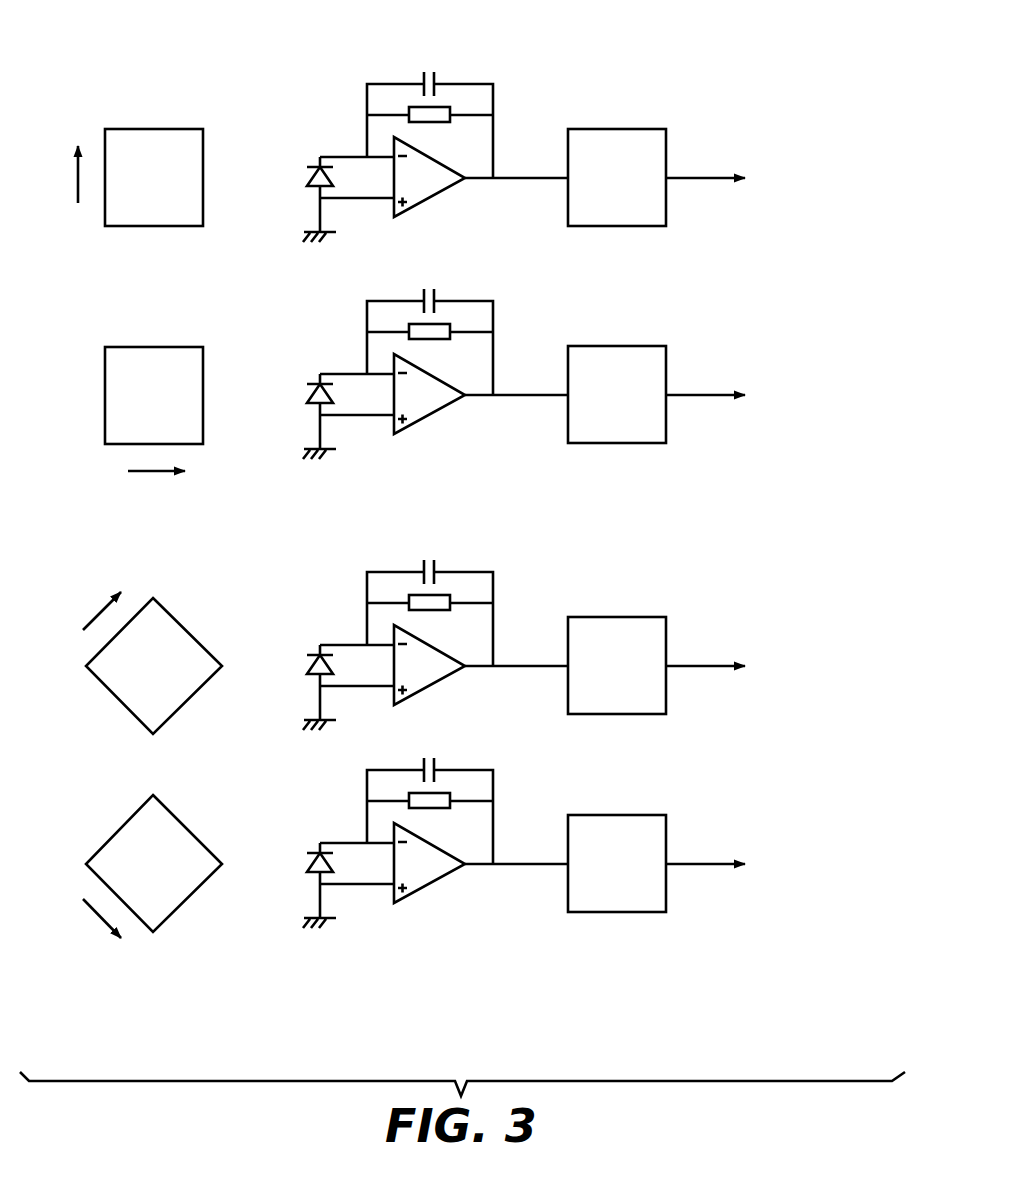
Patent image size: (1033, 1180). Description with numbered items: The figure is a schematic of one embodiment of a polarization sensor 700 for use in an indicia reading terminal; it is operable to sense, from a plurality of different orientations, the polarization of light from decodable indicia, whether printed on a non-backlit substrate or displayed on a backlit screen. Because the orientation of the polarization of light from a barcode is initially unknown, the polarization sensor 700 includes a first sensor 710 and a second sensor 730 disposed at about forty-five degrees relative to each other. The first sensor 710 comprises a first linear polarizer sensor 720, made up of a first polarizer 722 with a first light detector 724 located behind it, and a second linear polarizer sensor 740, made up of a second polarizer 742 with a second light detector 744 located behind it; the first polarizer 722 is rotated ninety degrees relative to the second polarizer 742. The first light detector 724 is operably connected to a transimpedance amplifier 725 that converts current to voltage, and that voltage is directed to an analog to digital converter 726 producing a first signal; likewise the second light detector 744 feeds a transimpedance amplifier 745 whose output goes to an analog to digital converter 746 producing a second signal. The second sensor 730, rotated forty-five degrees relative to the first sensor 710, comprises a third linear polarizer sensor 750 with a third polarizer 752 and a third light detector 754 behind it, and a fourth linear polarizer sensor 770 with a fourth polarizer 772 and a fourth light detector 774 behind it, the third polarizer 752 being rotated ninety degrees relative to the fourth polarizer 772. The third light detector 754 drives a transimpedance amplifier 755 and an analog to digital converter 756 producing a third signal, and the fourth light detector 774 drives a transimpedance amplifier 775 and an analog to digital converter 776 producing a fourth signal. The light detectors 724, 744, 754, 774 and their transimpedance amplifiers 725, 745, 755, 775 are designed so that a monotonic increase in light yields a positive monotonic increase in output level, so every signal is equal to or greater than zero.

The polarization sensor 700 is at (754, 57).
The first sensor 710 is at (754, 275).
The second sensor 730 is at (754, 742).
The first linear polarizer sensor 720 is at (272, 100).
The first polarizer 722 is at (153, 129).
The first light detector 724 is at (313, 179).
The transimpedance amplifier 725 is at (444, 213).
The analog to digital (A/D) converter 726 is at (618, 129).
The second linear polarizer sensor 740 is at (272, 317).
The second polarizer 742 is at (153, 347).
The second light detector 744 is at (313, 396).
The transimpedance amplifier 745 is at (444, 430).
The analog to digital (A/D) converter 746 is at (618, 346).
The third linear polarizer sensor 750 is at (272, 592).
The third polarizer 752 is at (153, 598).
The third light detector 754 is at (313, 667).
The transimpedance amplifier 755 is at (444, 698).
The analog to digital (A/D) converter 756 is at (618, 617).
The fourth linear polarizer sensor 770 is at (272, 812).
The fourth polarizer 772 is at (153, 795).
The fourth light detector 774 is at (313, 865).
The transimpedance amplifier 775 is at (444, 897).
The analog to digital (A/D) converter 776 is at (618, 815).